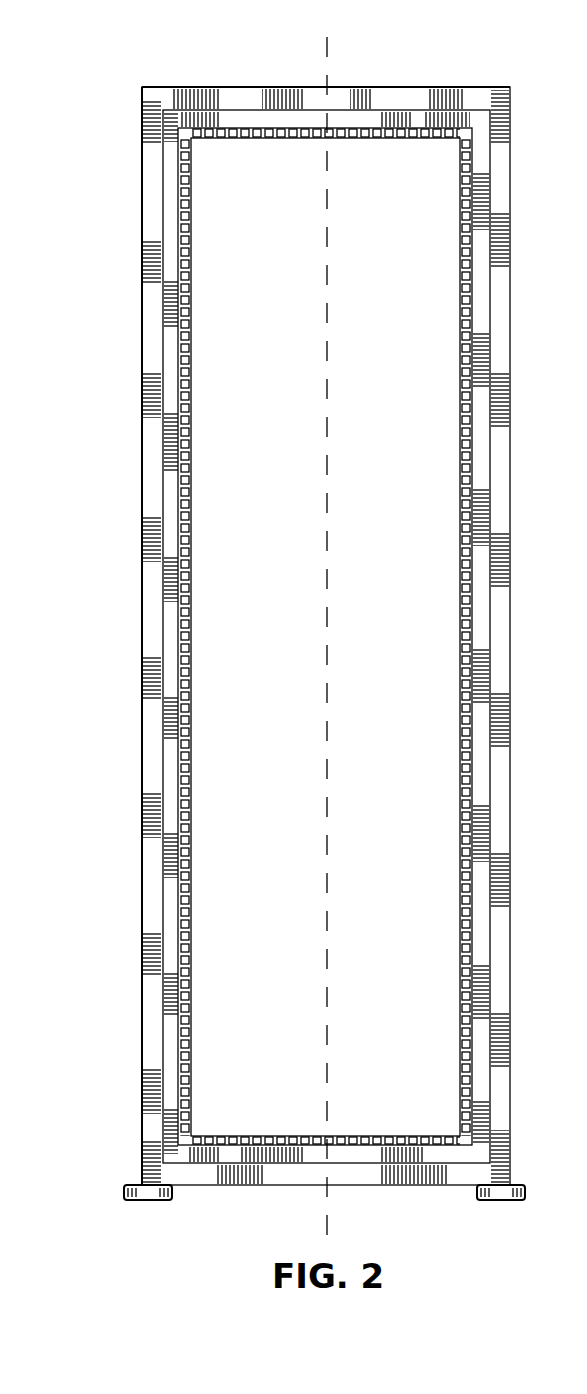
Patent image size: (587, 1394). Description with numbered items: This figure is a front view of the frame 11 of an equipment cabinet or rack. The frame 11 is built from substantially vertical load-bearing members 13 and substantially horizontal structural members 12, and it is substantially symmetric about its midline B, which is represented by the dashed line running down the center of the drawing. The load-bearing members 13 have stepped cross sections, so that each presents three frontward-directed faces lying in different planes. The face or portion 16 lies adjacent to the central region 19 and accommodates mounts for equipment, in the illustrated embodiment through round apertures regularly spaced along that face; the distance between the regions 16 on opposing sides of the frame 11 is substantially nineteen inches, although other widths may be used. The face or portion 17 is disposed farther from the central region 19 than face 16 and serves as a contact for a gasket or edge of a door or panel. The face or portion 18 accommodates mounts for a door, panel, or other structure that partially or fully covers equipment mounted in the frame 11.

The frame 11 is at (127, 100).
The horizontal structural members 12 is at (297, 76).
The vertical load-bearing members 13 is at (118, 613).
The face or portion 16 is at (180, 505).
The face or portion 17 is at (168, 344).
The face or portion 18 is at (150, 193).
The central region 19 is at (377, 656).
The side-to-side midline B is at (328, 838).